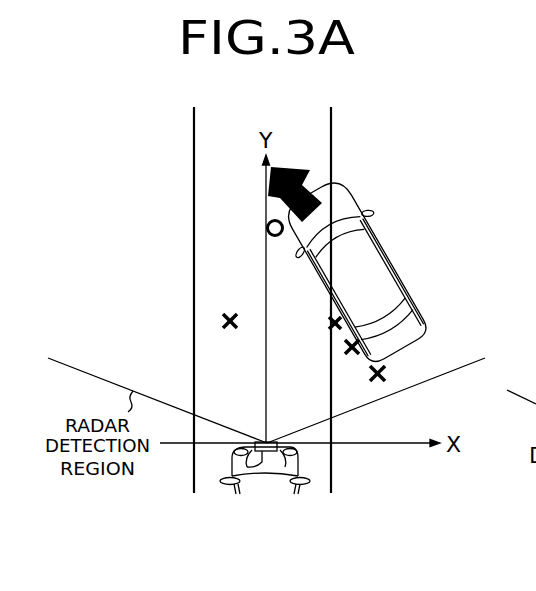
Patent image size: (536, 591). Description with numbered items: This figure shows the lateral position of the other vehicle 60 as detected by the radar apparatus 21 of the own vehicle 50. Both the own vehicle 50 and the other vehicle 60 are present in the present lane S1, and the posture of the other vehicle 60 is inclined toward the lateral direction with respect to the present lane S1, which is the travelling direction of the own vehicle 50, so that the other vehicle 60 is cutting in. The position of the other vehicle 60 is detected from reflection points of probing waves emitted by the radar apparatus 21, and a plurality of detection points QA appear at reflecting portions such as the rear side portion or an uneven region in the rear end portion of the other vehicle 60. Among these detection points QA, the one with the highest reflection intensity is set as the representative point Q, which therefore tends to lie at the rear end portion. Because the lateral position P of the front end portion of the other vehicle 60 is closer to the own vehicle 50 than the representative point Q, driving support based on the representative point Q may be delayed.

The radar apparatus 21 is at (232, 466).
The own vehicle 50 is at (302, 465).
The other vehicle 60 is at (385, 257).
The lateral position of front end portion P is at (267, 233).
The representative point Q is at (388, 377).
The detection points QA is at (352, 392).
The present lane S1 is at (223, 320).